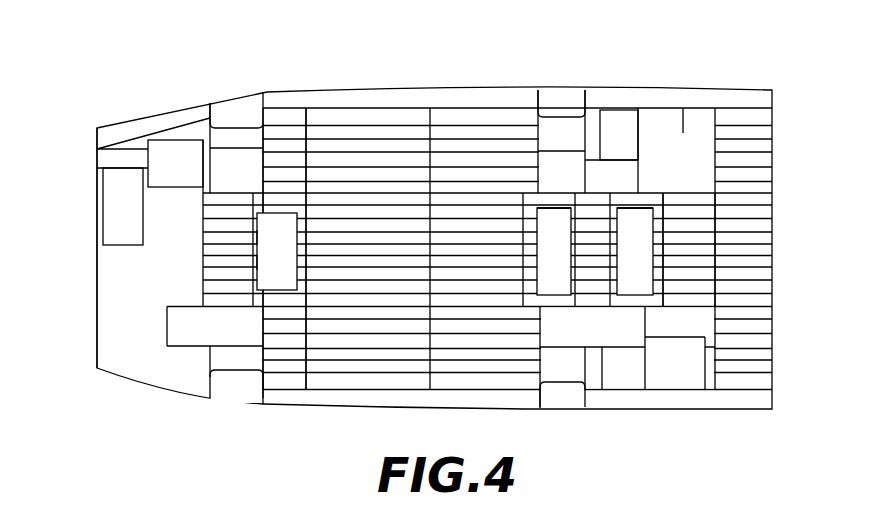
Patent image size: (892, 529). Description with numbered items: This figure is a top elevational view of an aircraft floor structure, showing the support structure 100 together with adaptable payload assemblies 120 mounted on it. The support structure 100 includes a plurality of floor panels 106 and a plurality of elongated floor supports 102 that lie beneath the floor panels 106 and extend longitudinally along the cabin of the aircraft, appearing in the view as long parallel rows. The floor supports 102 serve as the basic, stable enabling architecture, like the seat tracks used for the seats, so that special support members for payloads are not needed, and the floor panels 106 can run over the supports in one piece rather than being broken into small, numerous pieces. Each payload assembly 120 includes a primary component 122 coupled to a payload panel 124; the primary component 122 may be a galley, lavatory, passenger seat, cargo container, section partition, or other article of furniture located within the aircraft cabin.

The support structure 100 is at (166, 79).
The elongated floor supports 102 is at (350, 126).
The floor panels 106 is at (287, 192).
The adaptable payload assembly 120 is at (240, 213).
The primary component 122 is at (257, 235).
The payload panel 124 is at (257, 262).